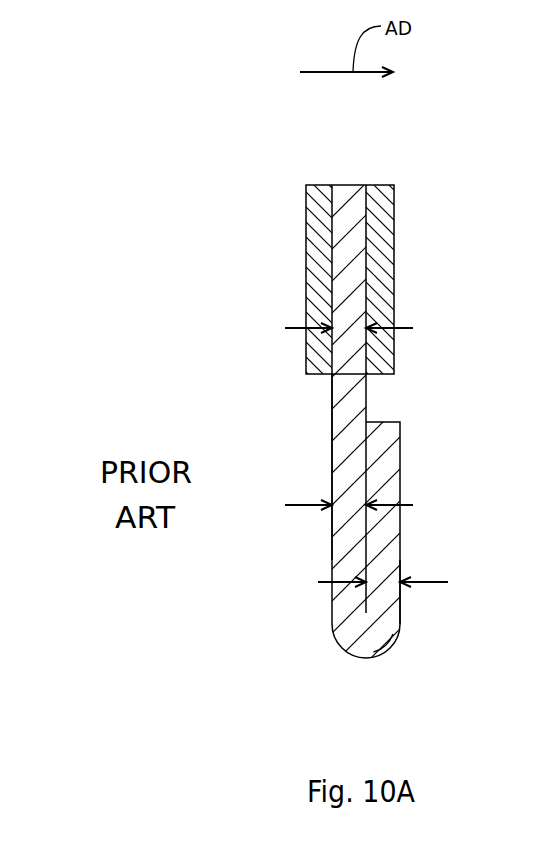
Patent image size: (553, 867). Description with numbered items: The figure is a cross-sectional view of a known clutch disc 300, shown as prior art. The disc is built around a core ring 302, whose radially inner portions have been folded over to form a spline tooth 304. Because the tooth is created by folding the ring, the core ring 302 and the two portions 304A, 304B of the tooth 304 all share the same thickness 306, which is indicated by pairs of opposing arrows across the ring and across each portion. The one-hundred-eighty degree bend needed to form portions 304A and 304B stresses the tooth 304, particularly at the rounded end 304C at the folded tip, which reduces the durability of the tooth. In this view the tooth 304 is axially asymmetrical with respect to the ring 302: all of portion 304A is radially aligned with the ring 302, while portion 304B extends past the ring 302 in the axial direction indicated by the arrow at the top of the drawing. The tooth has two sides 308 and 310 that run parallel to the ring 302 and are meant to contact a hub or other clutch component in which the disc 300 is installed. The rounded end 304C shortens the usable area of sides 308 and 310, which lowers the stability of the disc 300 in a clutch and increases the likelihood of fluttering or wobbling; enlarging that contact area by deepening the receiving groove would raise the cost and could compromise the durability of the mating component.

The clutch disc 300 is at (255, 228).
The core ring 302 is at (307, 418).
The spline tooth 304 is at (328, 620).
The portion of tooth 304A is at (347, 477).
The portion of tooth 304B is at (387, 535).
The rounded end 304C is at (358, 658).
The thickness 306 is at (401, 328).
The side 308 is at (332, 560).
The side 310 is at (401, 603).